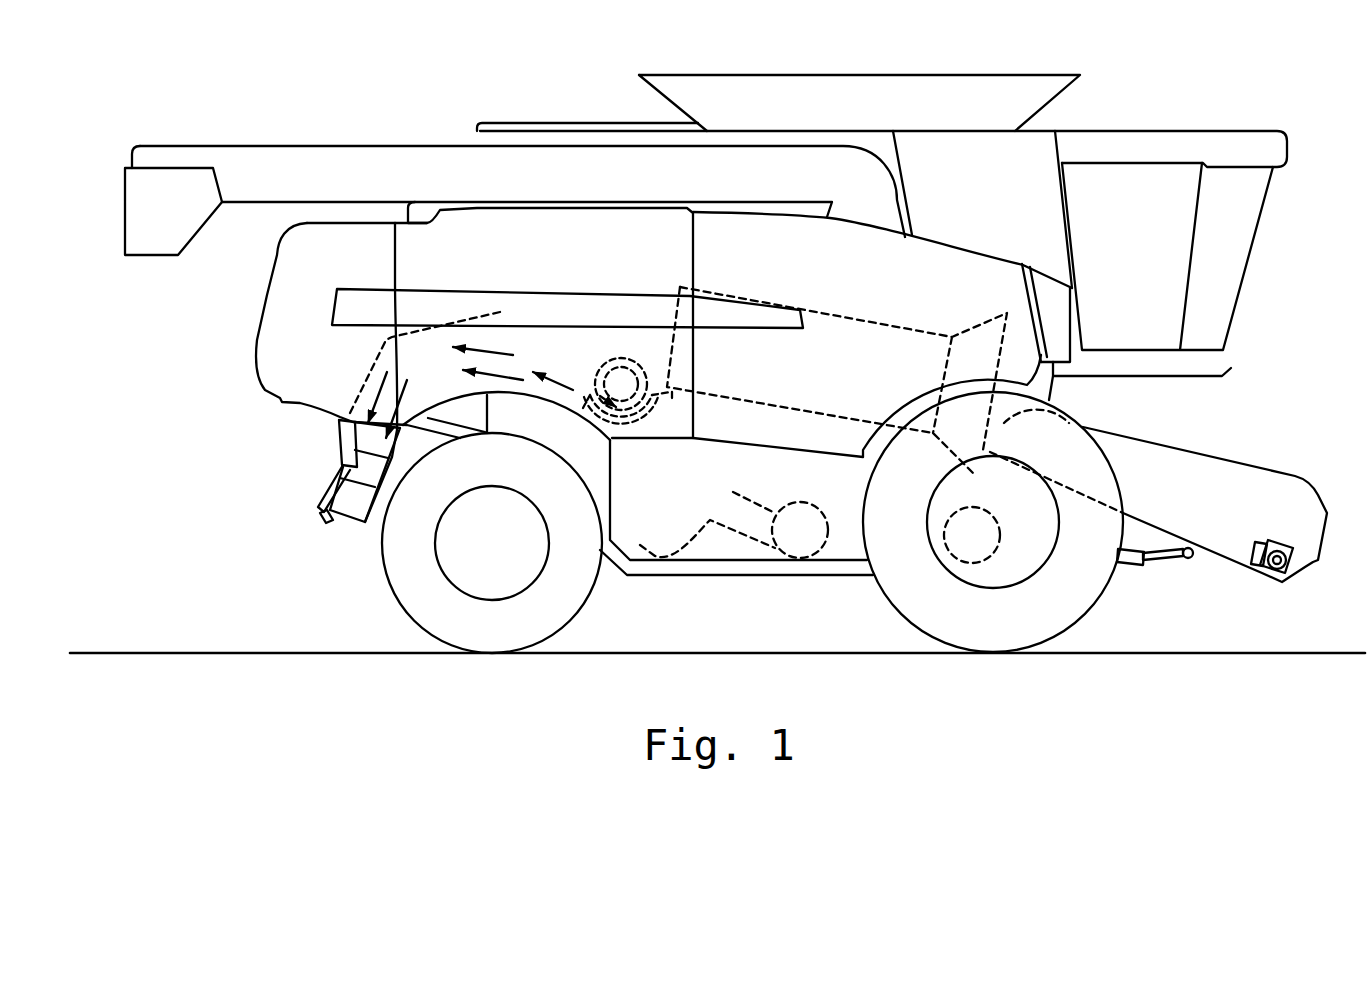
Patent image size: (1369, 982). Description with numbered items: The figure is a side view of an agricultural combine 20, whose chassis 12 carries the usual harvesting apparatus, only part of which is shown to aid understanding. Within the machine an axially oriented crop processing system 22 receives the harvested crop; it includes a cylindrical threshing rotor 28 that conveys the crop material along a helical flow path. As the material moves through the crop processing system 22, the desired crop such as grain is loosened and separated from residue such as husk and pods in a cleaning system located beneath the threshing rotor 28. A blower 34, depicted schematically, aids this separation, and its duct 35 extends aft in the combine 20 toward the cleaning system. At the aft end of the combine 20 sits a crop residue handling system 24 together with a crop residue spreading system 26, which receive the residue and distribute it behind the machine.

The agricultural combine 20 is at (403, 133).
The crop processing system 22 is at (890, 320).
The crop residue handling system 24 is at (603, 352).
The crop residue spreading system 26 is at (347, 520).
The chassis 12 is at (1053, 390).
The threshing rotor 28 is at (848, 420).
The blower 34 is at (822, 550).
The duct 35 is at (748, 523).